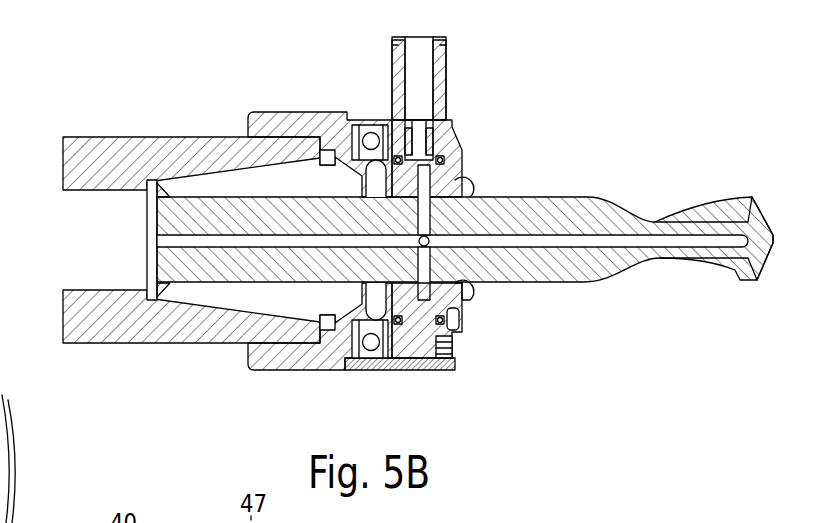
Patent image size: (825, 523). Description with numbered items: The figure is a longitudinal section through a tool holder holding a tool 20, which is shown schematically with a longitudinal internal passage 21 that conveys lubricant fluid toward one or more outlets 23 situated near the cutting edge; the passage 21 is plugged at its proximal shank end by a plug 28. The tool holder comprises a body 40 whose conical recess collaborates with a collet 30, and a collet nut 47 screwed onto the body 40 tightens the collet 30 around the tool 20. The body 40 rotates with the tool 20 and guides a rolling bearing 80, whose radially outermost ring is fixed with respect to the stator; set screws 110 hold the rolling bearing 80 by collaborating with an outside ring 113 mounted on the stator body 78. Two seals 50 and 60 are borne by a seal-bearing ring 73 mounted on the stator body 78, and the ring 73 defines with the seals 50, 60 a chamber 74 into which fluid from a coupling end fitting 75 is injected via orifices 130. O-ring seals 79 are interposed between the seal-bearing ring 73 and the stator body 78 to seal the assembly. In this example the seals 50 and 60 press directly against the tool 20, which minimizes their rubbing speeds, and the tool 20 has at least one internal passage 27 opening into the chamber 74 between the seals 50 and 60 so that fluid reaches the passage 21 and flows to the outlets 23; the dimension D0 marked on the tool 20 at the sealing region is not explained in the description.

The tool 20 is at (555, 196).
The internal passage 21 is at (237, 242).
The outlets 23 is at (763, 213).
The internal passage 27 is at (416, 209).
The plug 28 is at (146, 233).
The collet 30 is at (207, 184).
The body 40 is at (132, 334).
The collet nut 47 is at (260, 113).
The seal 50 is at (398, 283).
The seal 60 is at (460, 291).
The seal-bearing ring 73 is at (462, 312).
The chamber 74 is at (378, 181).
The coupling end fitting 75 is at (447, 85).
The body 78 is at (400, 372).
The O-ring seals 79 is at (458, 362).
The rolling bearing 80 is at (375, 372).
The set screws 110 is at (432, 372).
The outside ring 113 is at (352, 372).
The orifices 130 is at (458, 158).
The diameter dimension D0 is at (440, 199).